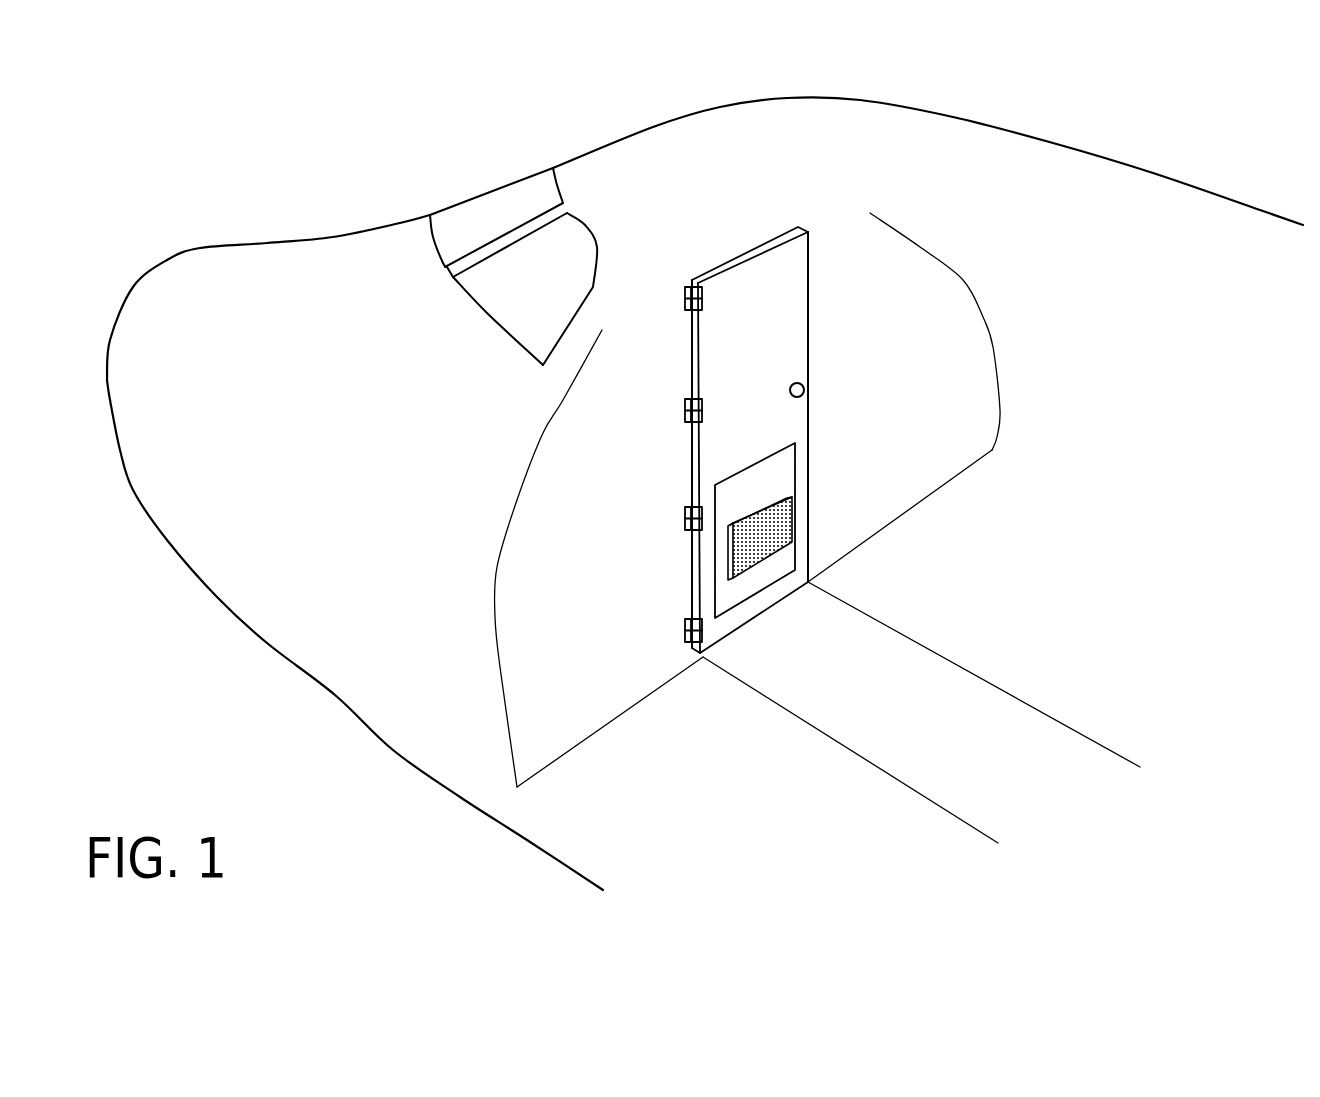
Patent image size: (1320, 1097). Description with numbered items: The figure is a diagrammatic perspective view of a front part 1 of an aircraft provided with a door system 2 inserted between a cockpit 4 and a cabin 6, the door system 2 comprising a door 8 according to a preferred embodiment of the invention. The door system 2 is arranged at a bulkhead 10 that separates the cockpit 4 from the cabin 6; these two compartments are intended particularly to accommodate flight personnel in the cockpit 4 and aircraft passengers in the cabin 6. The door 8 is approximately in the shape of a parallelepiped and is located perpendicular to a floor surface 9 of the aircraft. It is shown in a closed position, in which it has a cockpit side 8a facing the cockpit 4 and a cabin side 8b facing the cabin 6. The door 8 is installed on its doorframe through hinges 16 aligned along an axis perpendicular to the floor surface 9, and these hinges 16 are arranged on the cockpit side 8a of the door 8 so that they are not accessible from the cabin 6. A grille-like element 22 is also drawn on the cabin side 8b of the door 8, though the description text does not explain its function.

The front part 1 is at (357, 178).
The door system 2 is at (781, 385).
The cockpit 4 is at (348, 460).
The cabin 6 is at (1078, 652).
The door 8 is at (761, 246).
The cockpit side 8a is at (720, 280).
The cabin side 8b is at (788, 271).
The floor surface 9 is at (815, 692).
The bulkhead 10 is at (983, 317).
The hinges 16 is at (690, 313).
The ventilation grille 22 is at (780, 563).